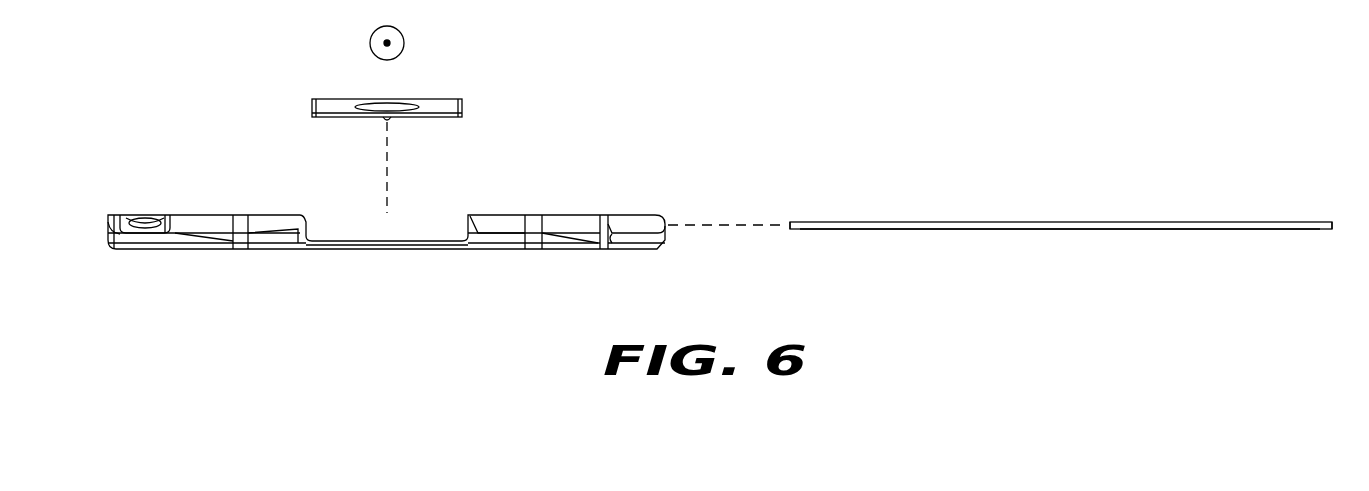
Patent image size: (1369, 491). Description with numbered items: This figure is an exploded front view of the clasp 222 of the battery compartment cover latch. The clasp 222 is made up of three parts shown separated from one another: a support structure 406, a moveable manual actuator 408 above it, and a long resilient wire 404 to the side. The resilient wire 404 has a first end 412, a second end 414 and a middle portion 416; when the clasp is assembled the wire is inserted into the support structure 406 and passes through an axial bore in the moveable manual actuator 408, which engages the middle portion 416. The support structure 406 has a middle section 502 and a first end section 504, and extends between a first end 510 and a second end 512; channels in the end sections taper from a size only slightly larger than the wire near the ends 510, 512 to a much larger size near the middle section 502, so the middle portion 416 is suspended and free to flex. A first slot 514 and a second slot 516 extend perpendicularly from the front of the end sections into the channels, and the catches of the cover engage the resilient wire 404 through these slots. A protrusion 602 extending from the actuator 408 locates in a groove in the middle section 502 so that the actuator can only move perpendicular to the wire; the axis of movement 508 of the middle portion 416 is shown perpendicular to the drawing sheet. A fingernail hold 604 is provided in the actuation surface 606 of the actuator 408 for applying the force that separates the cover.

The clasp 222 is at (788, 115).
The resilient wire 404 is at (1158, 222).
The support structure 406 is at (637, 222).
The moveable manual actuator 408 is at (323, 99).
The first end 412 is at (788, 222).
The second end 414 is at (1332, 224).
The middle portion 416 is at (955, 230).
The middle section 502 is at (388, 249).
The first end section 504 is at (150, 250).
The axis of movement 508 is at (404, 44).
The first end 510 is at (108, 240).
The second end 512 is at (663, 240).
The first slot 514 is at (240, 249).
The second slot 516 is at (530, 249).
The protrusion 602 is at (390, 119).
The fingernail hold 604 is at (388, 105).
The actuation surface 606 is at (328, 120).